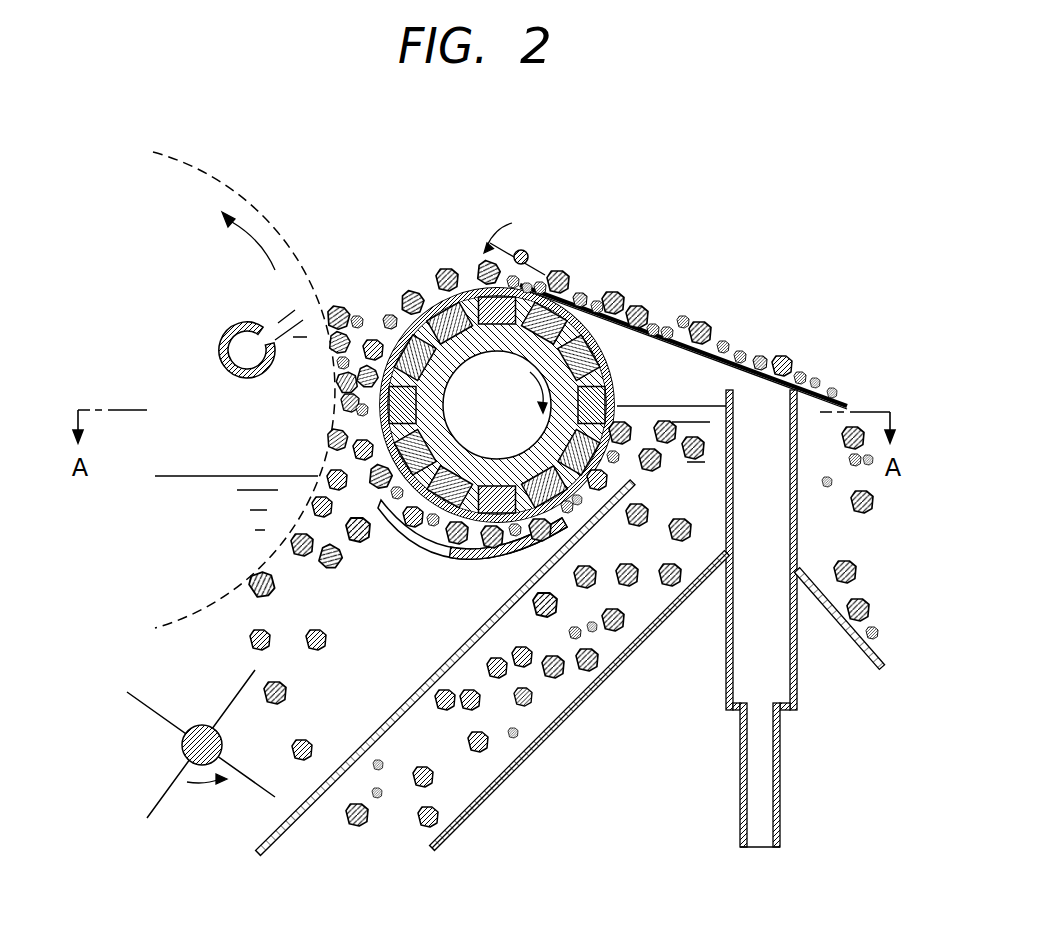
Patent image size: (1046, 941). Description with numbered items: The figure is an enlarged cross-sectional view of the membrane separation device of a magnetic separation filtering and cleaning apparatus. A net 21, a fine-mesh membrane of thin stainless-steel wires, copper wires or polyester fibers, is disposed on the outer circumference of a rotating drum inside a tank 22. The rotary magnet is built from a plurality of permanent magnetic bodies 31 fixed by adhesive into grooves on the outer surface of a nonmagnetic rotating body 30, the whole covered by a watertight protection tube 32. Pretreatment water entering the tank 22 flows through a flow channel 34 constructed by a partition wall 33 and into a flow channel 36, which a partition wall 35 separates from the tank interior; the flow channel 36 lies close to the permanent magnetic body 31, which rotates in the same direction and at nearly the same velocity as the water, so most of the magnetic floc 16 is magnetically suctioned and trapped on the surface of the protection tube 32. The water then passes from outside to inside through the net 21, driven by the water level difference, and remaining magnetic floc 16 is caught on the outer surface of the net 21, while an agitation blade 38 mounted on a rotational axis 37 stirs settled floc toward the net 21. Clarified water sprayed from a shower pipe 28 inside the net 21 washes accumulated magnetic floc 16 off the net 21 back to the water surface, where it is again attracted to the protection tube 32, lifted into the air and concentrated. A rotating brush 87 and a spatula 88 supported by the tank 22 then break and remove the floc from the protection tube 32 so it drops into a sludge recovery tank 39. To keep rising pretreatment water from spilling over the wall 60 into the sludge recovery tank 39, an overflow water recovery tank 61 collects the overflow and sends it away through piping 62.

The magnetic floc 16 is at (343, 307).
The net 21 is at (196, 172).
The tank 22 is at (600, 683).
The shower pipe 28 is at (220, 345).
The rotating body 30 is at (437, 428).
The permanent magnetic body 31 is at (436, 292).
The protection tube 32 is at (628, 318).
The partition wall 33 is at (373, 737).
The flow channel 34 is at (538, 735).
The partition wall 35 is at (437, 558).
The flow channel 36 is at (517, 562).
The rotational axis 37 is at (203, 725).
The agitation blade 38 is at (148, 708).
The sludge recovery tank 39 is at (840, 622).
The wall 60 is at (733, 468).
The overflow water recovery tank 61 is at (743, 667).
The piping 62 is at (740, 760).
The rotating brush 87 is at (533, 238).
The spatula 88 is at (670, 343).